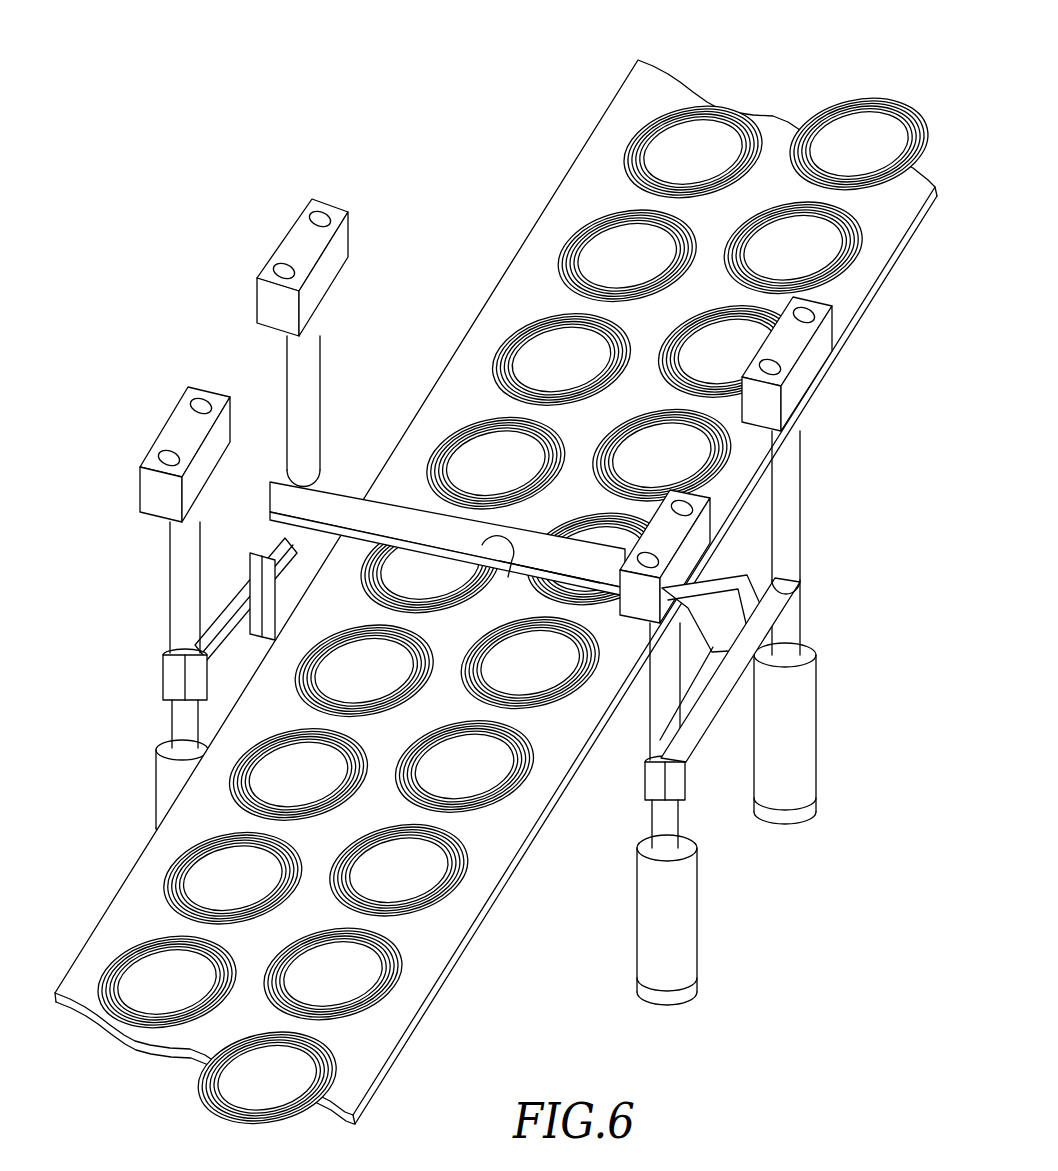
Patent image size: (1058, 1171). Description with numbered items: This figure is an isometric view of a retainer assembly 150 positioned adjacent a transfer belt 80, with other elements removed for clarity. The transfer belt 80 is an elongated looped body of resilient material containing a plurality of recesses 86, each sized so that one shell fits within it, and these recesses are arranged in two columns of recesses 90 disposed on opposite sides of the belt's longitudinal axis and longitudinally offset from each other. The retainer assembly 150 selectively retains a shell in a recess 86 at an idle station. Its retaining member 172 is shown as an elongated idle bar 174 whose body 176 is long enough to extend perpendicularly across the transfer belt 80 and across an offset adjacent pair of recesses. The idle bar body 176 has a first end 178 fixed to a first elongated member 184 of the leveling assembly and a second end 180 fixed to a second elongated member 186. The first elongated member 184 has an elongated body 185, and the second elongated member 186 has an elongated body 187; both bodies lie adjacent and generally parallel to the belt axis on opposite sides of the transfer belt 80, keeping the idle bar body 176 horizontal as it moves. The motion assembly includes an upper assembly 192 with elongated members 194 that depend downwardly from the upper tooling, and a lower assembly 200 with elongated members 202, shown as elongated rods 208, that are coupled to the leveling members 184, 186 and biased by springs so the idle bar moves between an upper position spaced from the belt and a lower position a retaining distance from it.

The transfer belt 80 is at (855, 286).
The recess 86 is at (822, 240).
The column of recesses 90 is at (750, 76).
The retainer assembly 150 is at (858, 632).
The retaining member 172 is at (427, 533).
The idle bar 174 is at (540, 550).
The idle bar body 176 is at (512, 567).
The first end 178 is at (280, 500).
The second end 180 is at (727, 590).
The first elongated member 184 is at (232, 570).
The elongated body 185 is at (217, 608).
The second elongated member 186 is at (773, 593).
The elongated body 187 is at (703, 702).
The upper assembly 192 is at (862, 395).
The elongated member 194 is at (293, 372).
The lower assembly 200 is at (841, 763).
The elongated member 202 is at (177, 717).
The elongated rod 208 is at (180, 746).